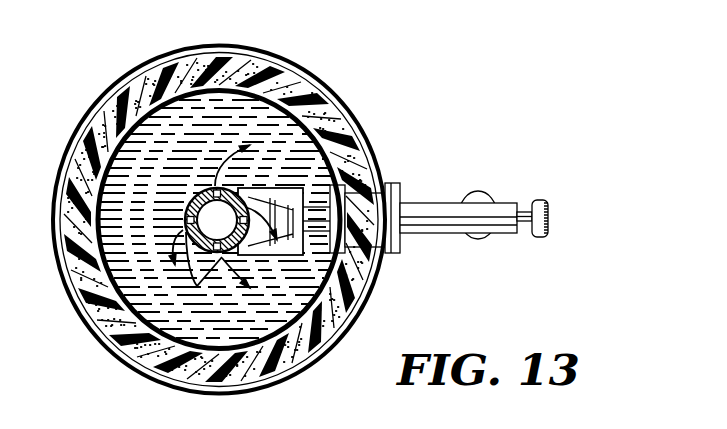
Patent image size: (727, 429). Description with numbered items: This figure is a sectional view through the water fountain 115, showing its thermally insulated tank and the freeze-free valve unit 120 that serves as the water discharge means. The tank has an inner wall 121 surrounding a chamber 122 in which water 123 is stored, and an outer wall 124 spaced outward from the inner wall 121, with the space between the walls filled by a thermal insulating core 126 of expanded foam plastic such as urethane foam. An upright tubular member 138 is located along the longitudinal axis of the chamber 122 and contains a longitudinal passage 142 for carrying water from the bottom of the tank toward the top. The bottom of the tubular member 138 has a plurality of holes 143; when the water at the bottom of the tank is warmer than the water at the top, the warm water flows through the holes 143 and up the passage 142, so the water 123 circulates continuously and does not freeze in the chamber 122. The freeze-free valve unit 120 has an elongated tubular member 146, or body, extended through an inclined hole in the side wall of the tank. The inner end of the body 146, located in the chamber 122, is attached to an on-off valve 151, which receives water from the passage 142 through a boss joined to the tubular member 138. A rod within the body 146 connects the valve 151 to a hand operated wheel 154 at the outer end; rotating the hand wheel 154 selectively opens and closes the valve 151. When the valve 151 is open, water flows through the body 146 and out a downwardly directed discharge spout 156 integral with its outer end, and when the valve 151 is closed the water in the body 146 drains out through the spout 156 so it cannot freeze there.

The water fountain 115 is at (370, 101).
The freeze-free valve unit 120 is at (499, 184).
The inner wall 121 is at (288, 70).
The chamber 122 is at (98, 222).
The water 123 is at (103, 343).
The outer wall 124 is at (370, 148).
The thermal insulating core 126 is at (75, 285).
The tubular member 138 is at (275, 188).
The longitudinal passage 142 is at (206, 204).
The holes 143 is at (128, 330).
The tubular member 146 is at (433, 204).
The on-off valve 151 is at (293, 240).
The hand operated wheel 154 is at (550, 220).
The discharge spout 156 is at (482, 238).